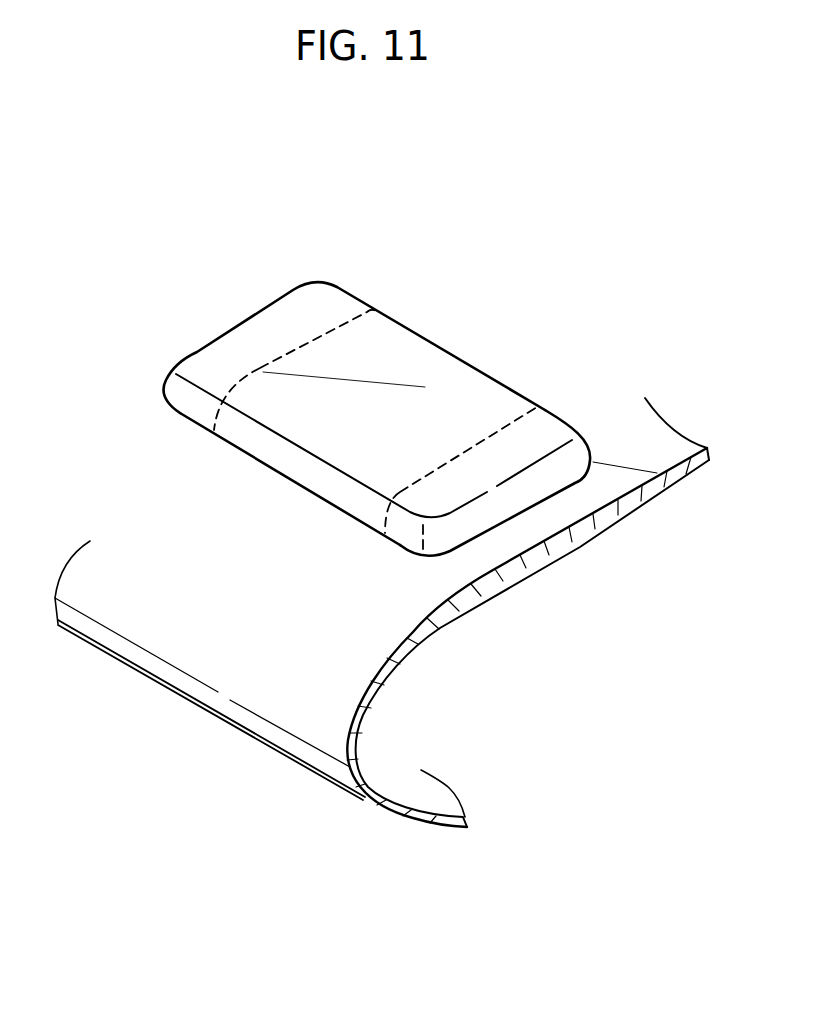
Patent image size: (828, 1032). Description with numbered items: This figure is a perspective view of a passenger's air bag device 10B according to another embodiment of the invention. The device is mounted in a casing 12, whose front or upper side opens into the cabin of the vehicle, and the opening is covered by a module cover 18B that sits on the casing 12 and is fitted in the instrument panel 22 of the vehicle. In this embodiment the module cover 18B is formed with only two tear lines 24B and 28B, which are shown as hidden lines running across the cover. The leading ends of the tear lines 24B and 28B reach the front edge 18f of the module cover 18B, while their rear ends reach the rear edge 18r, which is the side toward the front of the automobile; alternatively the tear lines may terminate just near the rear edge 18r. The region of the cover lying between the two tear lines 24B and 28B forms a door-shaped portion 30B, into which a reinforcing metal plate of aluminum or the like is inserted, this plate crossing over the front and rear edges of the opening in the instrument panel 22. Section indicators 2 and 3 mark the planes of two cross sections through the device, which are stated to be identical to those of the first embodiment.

The passenger's air bag device 10B is at (343, 368).
The casing 12 is at (498, 592).
The module cover 18B is at (197, 351).
The front edge 18f is at (325, 494).
The rear edge 18r is at (513, 383).
The instrument panel 22 is at (652, 452).
The tear line 24B is at (306, 346).
The tear line 28B is at (444, 466).
The door-shaped portion 30B is at (292, 418).
The section line 2- 2 is at (487, 356).
The section line 3- 3 is at (193, 310).